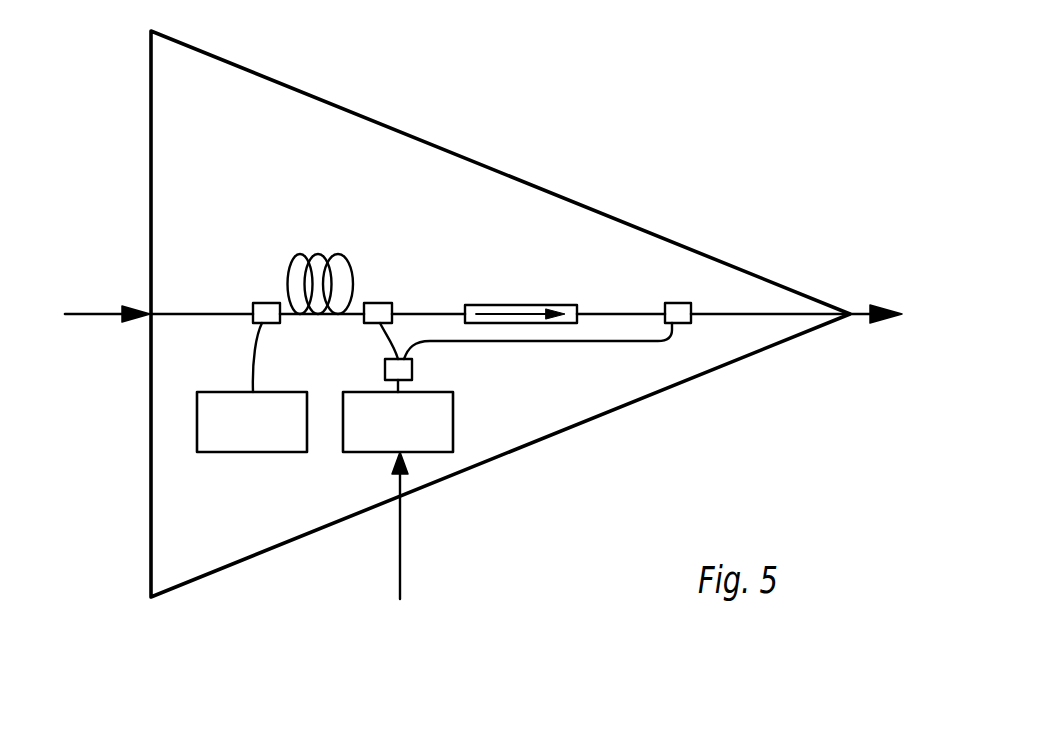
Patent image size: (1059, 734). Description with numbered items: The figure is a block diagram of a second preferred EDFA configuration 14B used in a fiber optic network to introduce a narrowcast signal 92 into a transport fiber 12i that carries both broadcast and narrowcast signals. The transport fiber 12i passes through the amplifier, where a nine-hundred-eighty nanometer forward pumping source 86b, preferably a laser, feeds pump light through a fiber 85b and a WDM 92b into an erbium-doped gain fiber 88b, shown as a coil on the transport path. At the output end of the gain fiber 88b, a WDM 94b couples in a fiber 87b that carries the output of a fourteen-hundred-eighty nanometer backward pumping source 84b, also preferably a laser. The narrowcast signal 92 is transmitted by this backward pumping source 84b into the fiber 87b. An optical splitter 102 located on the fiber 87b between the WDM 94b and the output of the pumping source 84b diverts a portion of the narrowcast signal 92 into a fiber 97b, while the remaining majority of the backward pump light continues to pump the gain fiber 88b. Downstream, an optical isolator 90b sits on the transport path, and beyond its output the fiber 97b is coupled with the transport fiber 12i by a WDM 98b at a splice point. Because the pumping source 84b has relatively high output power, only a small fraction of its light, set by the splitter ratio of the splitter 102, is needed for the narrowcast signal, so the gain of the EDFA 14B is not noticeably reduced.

The EDFA configuration 14B is at (512, 170).
The transport fiber 12i is at (93, 317).
The WDM 92b is at (258, 302).
The erbium-doped gain fiber 88b is at (319, 254).
The WDM 94b is at (380, 302).
The optical isolator 90b is at (465, 310).
The fiber 85b is at (253, 352).
The 980 nm forward pumping source 86b is at (216, 453).
The fiber 87b is at (392, 343).
The optical splitter 102 is at (413, 370).
The fiber 97b is at (560, 343).
The WDM 98b is at (684, 325).
The 1480 nm backward pumping source 84b is at (454, 413).
The narrowcast signal 92 is at (402, 568).